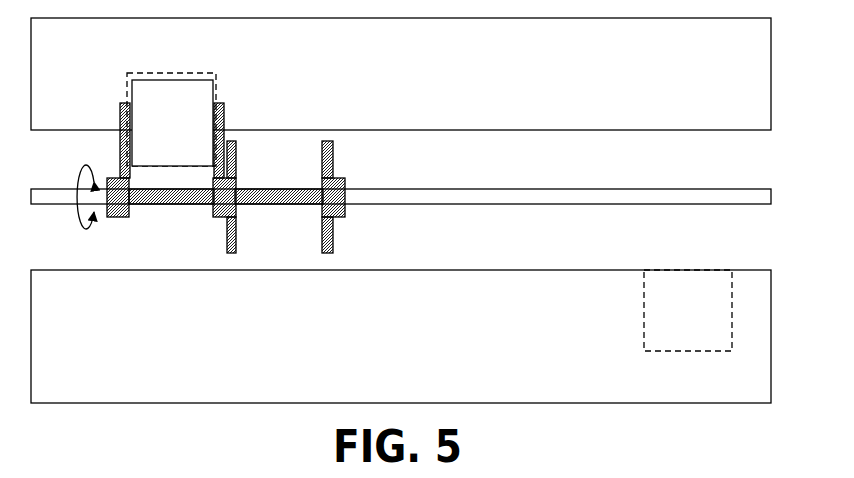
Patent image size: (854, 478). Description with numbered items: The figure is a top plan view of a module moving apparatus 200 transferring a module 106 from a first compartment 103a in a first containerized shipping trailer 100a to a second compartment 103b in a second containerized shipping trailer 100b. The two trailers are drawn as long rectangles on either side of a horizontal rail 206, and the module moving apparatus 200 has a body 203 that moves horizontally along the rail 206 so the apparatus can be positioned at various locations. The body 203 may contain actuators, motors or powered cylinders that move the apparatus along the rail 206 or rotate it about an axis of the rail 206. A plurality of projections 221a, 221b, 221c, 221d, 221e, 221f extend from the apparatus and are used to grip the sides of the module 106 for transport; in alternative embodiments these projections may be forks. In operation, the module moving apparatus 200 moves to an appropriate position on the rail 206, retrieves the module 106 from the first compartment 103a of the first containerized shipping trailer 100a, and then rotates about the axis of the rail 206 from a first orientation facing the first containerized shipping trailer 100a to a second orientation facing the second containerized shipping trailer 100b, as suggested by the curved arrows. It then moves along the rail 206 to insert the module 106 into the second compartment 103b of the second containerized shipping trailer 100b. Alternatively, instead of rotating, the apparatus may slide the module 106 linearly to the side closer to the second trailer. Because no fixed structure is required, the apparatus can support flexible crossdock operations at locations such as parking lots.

The first containerized shipping trailer 100a is at (401, 74).
The second containerized shipping trailer 100b is at (401, 336).
The first compartment 103a is at (146, 75).
The second compartment 103b is at (688, 310).
The module 106 is at (172, 123).
The module moving apparatus 200 is at (445, 215).
The body 203 is at (143, 205).
The rail 206 is at (706, 190).
The projection 221a is at (120, 150).
The projection 221b is at (224, 110).
The projection 221c is at (236, 161).
The projection 221d is at (333, 161).
The projection 221e is at (236, 239).
The projection 221f is at (333, 239).